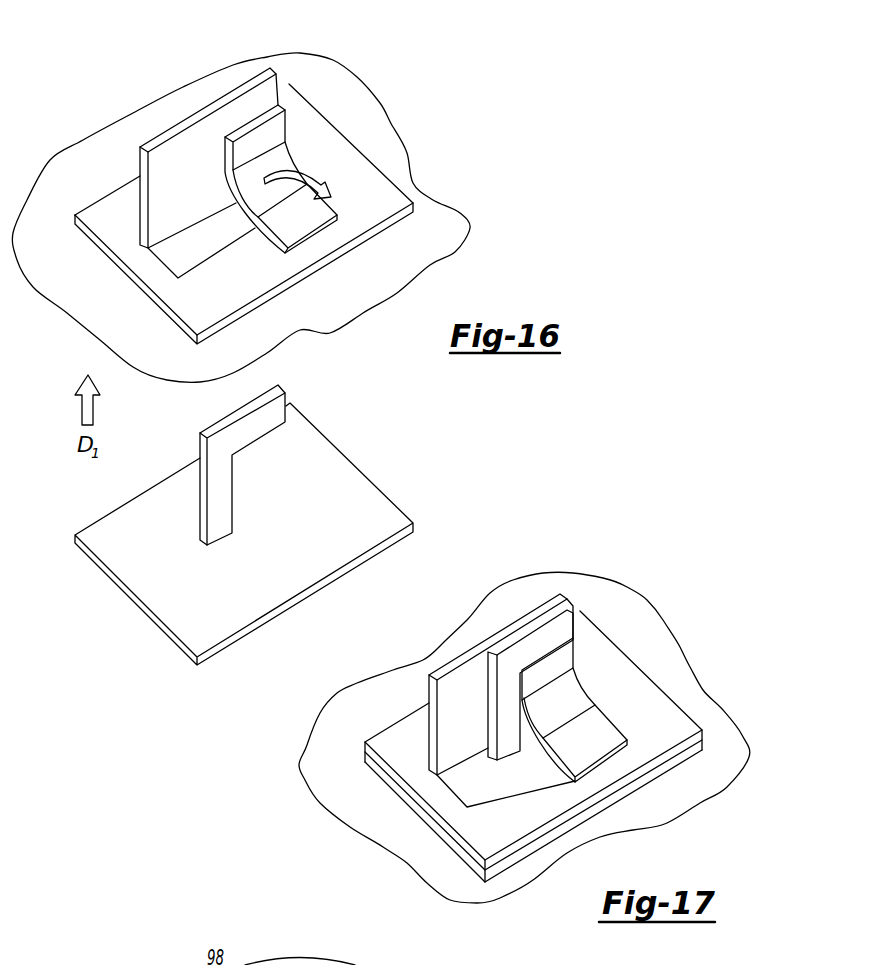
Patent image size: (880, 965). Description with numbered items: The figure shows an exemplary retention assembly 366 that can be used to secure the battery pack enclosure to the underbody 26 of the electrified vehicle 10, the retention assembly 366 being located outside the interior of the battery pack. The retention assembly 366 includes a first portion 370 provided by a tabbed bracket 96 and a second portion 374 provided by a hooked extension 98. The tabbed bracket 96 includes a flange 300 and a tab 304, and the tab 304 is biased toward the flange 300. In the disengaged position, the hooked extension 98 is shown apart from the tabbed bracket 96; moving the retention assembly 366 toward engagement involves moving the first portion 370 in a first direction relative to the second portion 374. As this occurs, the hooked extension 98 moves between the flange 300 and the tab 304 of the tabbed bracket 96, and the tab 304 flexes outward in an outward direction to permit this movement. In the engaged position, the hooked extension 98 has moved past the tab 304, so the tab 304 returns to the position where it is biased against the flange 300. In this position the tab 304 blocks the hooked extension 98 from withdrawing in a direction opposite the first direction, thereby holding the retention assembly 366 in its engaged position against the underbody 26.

In FIG. 16, the electrified vehicle 10 is at (306, 187).
In FIG. 16, the underbody 26 is at (436, 222).
In FIG. 17, the underbody 26 is at (687, 786).
In FIG. 16, the tabbed bracket 96 is at (378, 195).
In FIG. 16, the hooked extension 98 is at (220, 507).
In FIG. 17, the hooked extension 98 is at (510, 713).
In FIG. 16, the flange 300 is at (243, 113).
In FIG. 17, the flange 300 is at (472, 678).
In FIG. 16, the tab 304 is at (273, 132).
In FIG. 17, the tab 304 is at (563, 660).
In FIG. 16, the retention assembly 366 is at (428, 114).
In FIG. 17, the retention assembly 366 is at (718, 636).
In FIG. 16, the first portion 370 is at (115, 208).
In FIG. 16, the second portion 374 is at (225, 617).